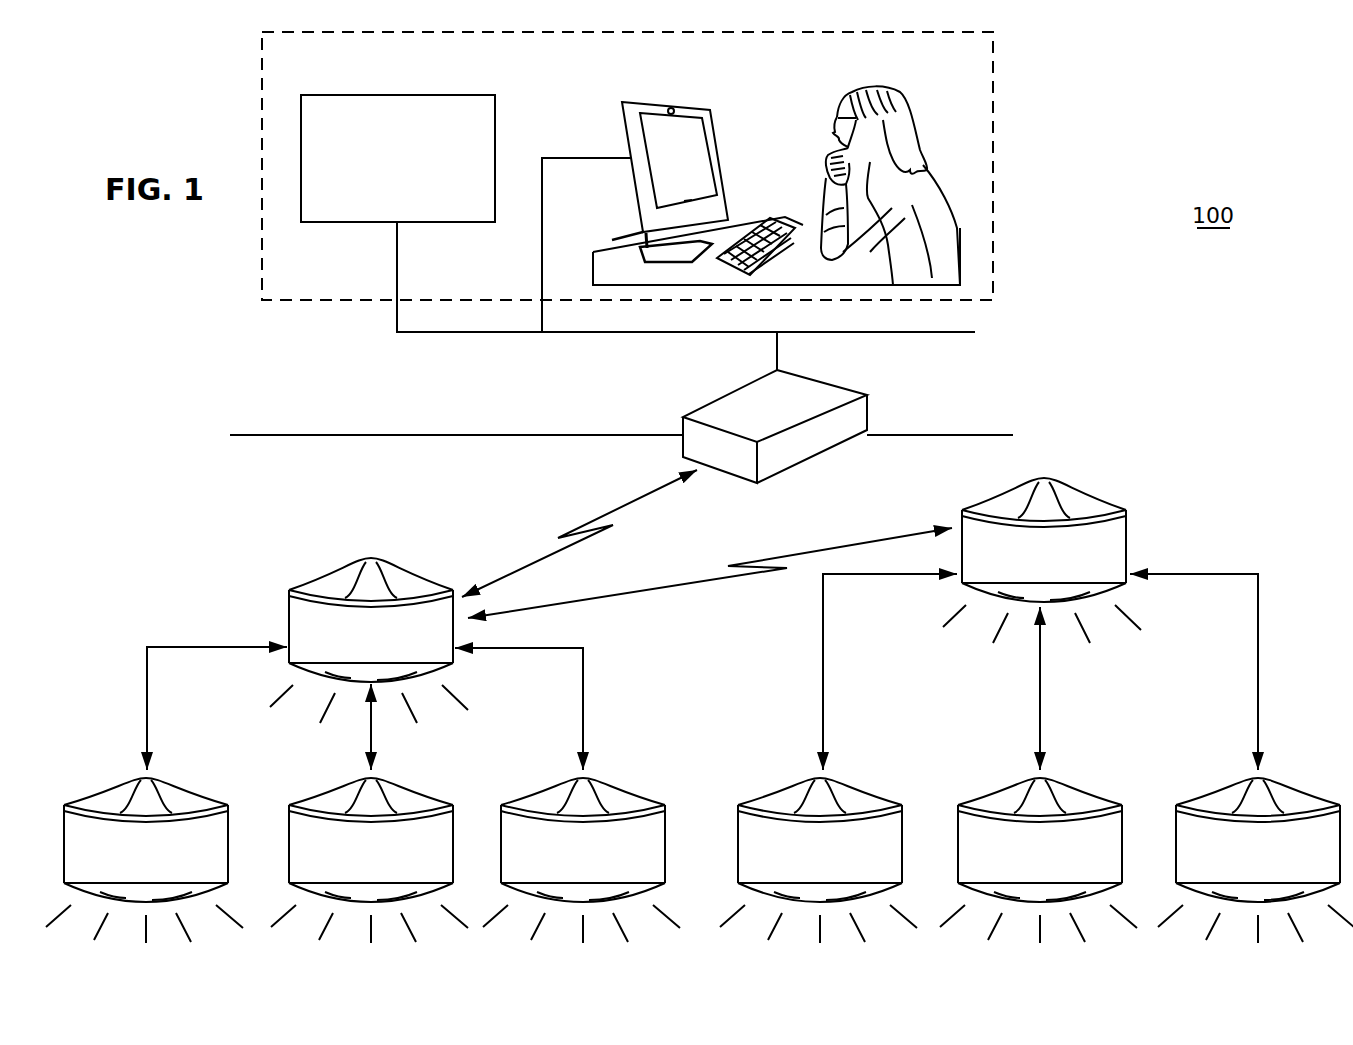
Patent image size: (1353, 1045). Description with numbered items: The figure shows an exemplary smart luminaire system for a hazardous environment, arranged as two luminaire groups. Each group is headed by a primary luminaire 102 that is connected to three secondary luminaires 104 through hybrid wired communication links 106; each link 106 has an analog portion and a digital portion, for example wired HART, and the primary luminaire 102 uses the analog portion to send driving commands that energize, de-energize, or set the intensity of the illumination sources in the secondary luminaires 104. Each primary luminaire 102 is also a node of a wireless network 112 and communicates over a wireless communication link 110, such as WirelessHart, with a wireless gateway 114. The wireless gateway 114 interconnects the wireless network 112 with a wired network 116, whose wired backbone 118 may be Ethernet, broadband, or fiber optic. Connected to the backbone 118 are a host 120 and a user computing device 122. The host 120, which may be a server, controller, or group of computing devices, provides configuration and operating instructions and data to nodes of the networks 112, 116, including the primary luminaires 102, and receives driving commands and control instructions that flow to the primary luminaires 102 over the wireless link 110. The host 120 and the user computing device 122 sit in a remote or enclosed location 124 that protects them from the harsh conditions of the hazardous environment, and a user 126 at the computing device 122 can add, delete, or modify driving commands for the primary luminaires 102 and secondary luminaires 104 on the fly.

The primary luminaire 102 is at (412, 573).
The secondary luminaire 104 is at (188, 785).
The hybrid wired communication link 106 is at (205, 643).
The wireless communication link 110 is at (617, 505).
The wireless network 112 is at (336, 481).
The wireless gateway 114 is at (832, 386).
The wired network 116 is at (336, 398).
The wired backbone 118 is at (494, 334).
The host 120 is at (438, 95).
The user computing device 122 is at (685, 104).
The remote or enclosed location 124 is at (994, 146).
The user 126 is at (896, 92).